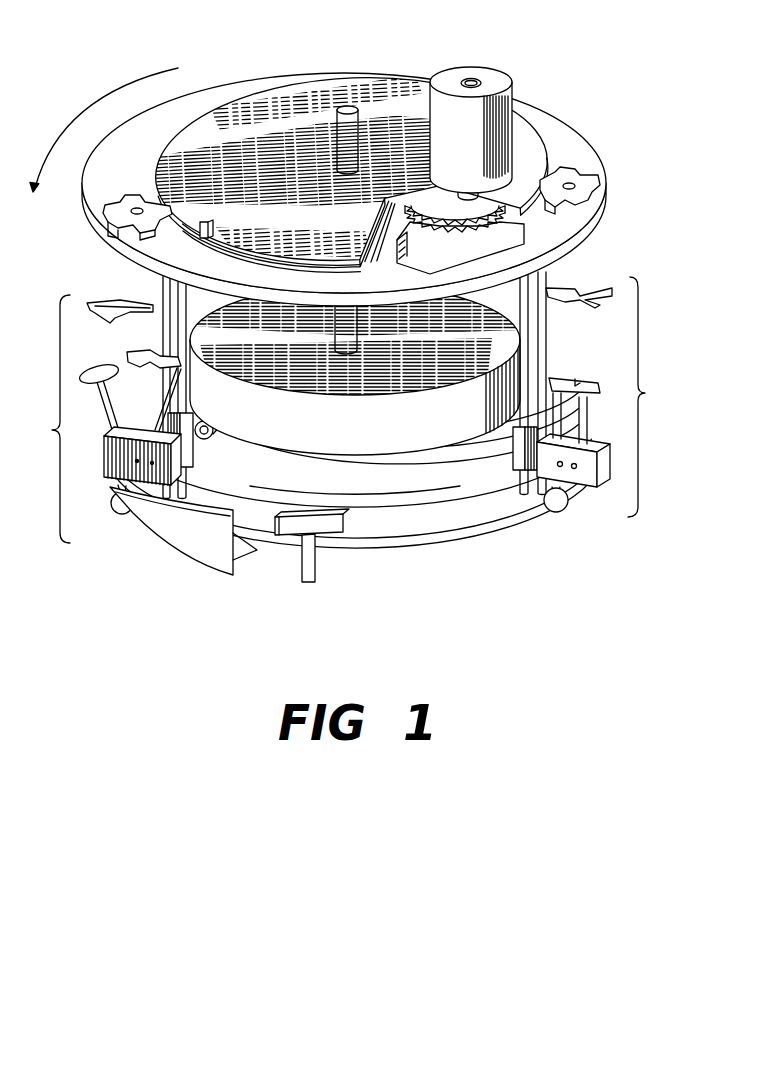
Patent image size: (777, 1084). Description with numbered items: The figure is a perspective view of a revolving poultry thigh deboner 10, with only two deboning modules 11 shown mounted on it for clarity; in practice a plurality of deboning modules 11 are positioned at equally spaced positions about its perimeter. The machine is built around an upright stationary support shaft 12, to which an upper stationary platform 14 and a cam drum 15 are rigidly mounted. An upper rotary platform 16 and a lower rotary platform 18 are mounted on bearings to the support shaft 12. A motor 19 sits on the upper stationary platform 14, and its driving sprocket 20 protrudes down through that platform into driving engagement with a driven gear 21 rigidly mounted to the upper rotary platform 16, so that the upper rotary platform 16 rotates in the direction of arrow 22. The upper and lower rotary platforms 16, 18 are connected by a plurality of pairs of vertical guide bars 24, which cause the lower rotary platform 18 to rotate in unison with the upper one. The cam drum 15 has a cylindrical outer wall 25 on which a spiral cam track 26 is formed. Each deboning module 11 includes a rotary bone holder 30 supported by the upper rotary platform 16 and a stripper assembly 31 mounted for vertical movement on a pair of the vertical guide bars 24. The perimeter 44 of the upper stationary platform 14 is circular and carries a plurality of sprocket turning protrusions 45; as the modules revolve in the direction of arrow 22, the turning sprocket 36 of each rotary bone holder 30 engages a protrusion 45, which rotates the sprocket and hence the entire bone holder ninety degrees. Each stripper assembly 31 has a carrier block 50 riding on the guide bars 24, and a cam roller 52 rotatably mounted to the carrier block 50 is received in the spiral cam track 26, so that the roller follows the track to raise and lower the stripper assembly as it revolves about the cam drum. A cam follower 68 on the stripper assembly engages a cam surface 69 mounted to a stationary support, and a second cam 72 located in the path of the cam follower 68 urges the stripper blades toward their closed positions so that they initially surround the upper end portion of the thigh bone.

The revolving poultry thigh deboner 10 is at (234, 36).
The deboning module 11 is at (347, 410).
The upright stationary support shaft 12 is at (362, 342).
The upper stationary platform 14 is at (290, 100).
The cam drum 15 is at (396, 498).
The upper rotary platform 16 is at (160, 128).
The lower rotary platform 18 is at (455, 520).
The motor 19 is at (483, 80).
The driving sprocket 20 is at (466, 220).
The driven gear 21 is at (413, 222).
The arrow 22 is at (100, 100).
The vertical guide bars 24 is at (188, 362).
The cylindrical outer wall 25 is at (348, 500).
The spiral cam track 26 is at (287, 423).
The rotary bone holder 30 is at (92, 273).
The stripper assembly 31 is at (95, 481).
The turning sprocket 36 is at (115, 200).
The perimeter 44 is at (243, 247).
The sprocket turning protrusions 45 is at (184, 216).
The carrier block 50 is at (193, 468).
The cam roller 52 is at (206, 437).
The cam follower 68 is at (125, 515).
The cam surface 69 is at (205, 548).
The second cam 72 is at (282, 530).